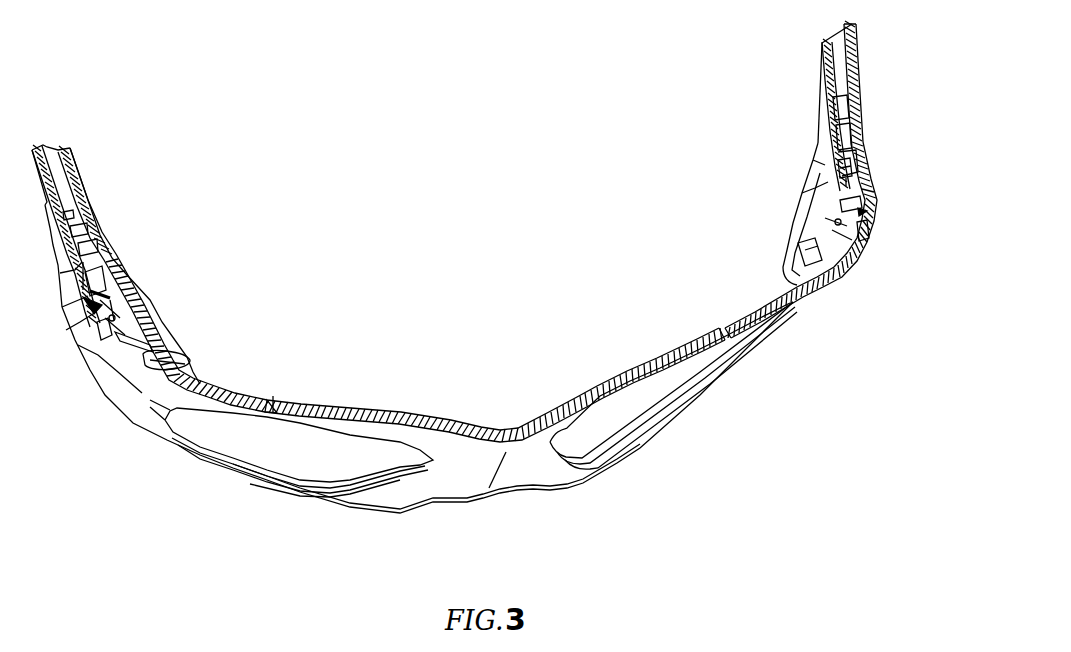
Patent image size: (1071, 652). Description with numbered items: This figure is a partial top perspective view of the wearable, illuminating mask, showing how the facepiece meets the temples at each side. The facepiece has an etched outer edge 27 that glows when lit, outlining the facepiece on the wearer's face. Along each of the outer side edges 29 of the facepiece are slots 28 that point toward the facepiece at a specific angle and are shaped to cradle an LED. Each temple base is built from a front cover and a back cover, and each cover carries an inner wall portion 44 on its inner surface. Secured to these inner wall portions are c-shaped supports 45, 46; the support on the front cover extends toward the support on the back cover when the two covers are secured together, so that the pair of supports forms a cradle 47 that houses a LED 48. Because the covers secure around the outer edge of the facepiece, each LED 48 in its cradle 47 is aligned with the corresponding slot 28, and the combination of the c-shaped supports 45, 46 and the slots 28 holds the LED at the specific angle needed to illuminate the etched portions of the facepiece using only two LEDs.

The outer edge 27 is at (432, 404).
The slots 28 is at (117, 370).
The outer side edges 29 is at (142, 382).
The inner wall portion 44 is at (847, 183).
The c-shaped support 45 is at (142, 312).
The c-shaped support 46 is at (100, 333).
The cradle 47 is at (105, 303).
The LED 48 is at (115, 334).